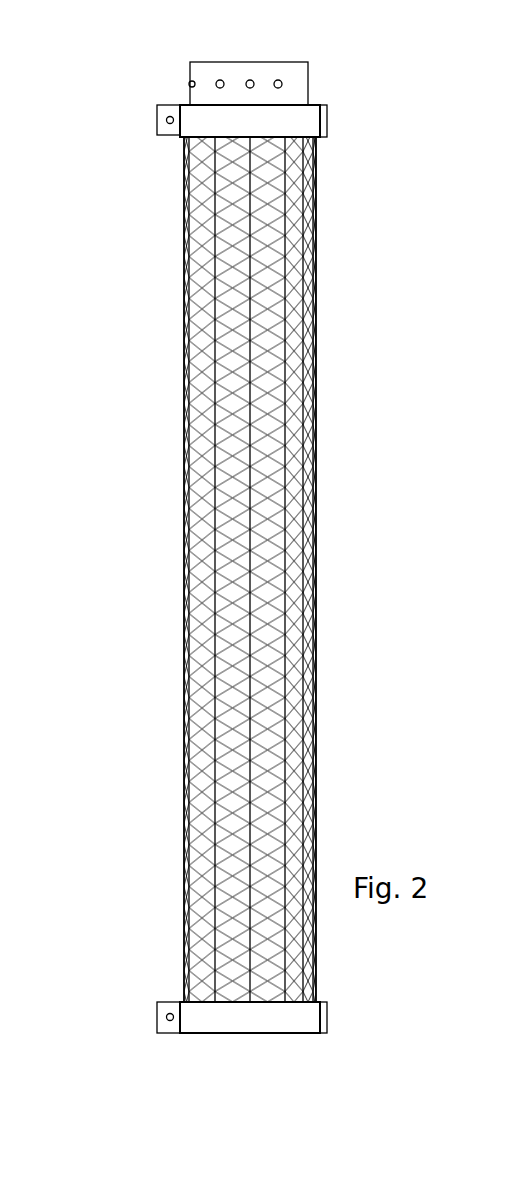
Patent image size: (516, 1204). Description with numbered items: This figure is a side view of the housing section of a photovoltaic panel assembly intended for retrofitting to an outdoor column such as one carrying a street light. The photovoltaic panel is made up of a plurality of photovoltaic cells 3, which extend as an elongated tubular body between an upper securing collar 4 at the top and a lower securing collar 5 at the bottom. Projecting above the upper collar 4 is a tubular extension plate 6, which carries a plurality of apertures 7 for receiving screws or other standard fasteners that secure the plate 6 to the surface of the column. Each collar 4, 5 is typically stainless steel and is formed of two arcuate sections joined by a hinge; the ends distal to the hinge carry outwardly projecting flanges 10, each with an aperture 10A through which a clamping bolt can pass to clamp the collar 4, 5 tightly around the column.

The photovoltaic cells 3 is at (277, 306).
The upper securing collar 4 is at (299, 129).
The lower securing collar 5 is at (272, 1012).
The tubular extension plate 6 is at (281, 63).
The apertures 7 is at (284, 85).
The outwardly projecting flanges 10 is at (172, 105).
The aperture 10A is at (158, 1012).